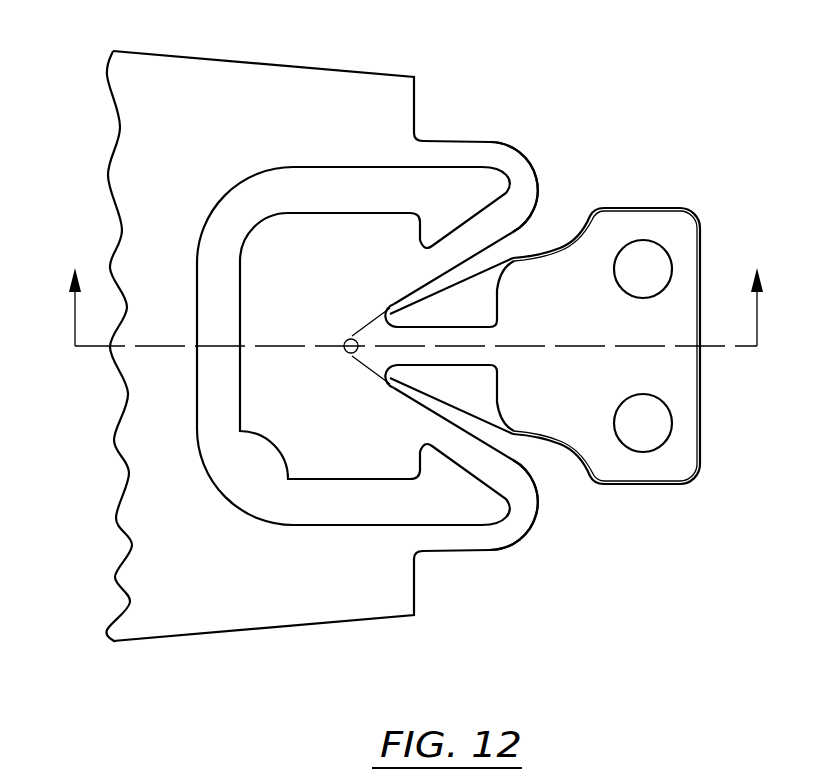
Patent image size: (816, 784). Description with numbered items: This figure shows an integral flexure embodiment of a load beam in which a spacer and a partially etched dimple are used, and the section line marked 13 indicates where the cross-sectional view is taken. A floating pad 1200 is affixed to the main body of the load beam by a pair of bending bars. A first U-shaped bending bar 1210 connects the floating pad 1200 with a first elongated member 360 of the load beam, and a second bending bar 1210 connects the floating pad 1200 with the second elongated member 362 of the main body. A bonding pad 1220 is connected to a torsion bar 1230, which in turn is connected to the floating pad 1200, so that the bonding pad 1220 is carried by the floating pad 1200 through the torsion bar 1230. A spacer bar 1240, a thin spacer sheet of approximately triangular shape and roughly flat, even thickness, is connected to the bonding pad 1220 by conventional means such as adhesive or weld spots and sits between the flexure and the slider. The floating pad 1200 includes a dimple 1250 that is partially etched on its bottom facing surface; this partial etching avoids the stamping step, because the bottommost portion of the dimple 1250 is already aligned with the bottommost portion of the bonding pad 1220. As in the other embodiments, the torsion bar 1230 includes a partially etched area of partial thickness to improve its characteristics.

The first elongated member 360 is at (358, 597).
The second elongated member 362 is at (285, 82).
The floating pad 1200 is at (340, 264).
The U-shaped bending bar 1210 is at (519, 168).
The bonding pad 1220 is at (628, 328).
The torsion bar 1230 is at (422, 344).
The spacer bar 1240 is at (458, 387).
The dimple 1250 is at (355, 352).
The section line 13- 13 is at (417, 292).